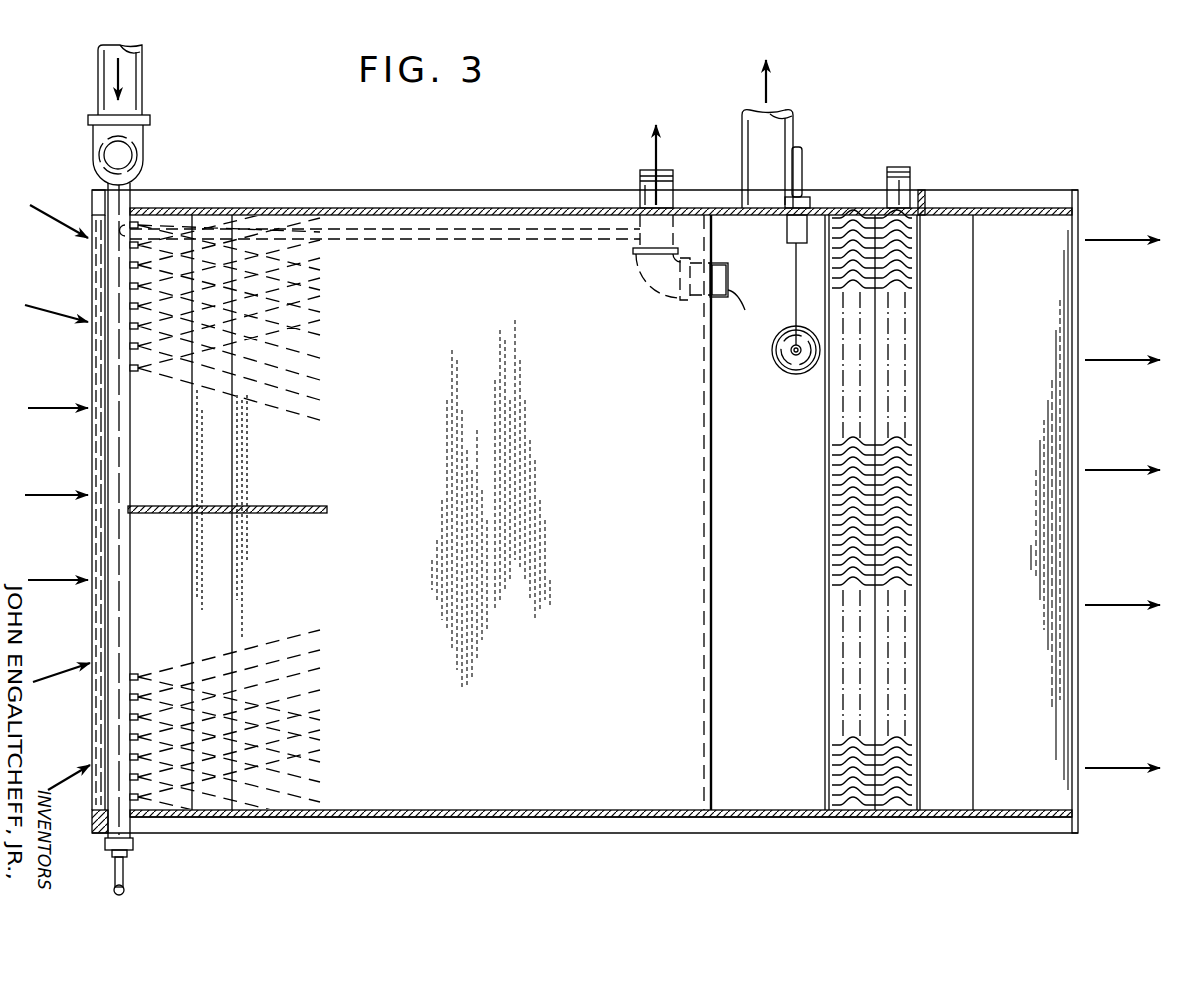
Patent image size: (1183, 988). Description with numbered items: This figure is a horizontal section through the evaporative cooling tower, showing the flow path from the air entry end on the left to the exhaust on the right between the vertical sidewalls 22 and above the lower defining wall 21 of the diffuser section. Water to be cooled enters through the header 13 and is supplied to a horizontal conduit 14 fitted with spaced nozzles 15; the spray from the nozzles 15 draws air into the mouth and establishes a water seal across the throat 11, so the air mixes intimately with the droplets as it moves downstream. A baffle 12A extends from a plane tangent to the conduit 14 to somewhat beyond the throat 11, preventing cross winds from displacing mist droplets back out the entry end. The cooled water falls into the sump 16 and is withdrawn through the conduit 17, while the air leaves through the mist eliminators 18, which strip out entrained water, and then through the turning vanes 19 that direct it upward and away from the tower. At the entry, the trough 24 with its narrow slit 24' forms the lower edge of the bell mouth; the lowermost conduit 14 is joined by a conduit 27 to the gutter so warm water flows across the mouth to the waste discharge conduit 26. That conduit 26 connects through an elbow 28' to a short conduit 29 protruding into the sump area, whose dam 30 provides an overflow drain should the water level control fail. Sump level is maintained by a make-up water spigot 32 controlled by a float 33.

The throat 11 is at (215, 546).
The baffle 12A is at (297, 505).
The header 13 is at (104, 140).
The horizontal conduit 14 is at (118, 459).
The nozzle 15 is at (140, 371).
The sump 16 is at (780, 564).
The conduit 17 is at (750, 128).
The mist eliminator 18 is at (918, 476).
The turning vane 19 is at (1040, 572).
The lower defining wall 21 is at (466, 785).
The sidewall 22 is at (500, 207).
The trough 24 is at (66, 512).
The slit 24' is at (71, 512).
The waste discharge conduit 26 is at (640, 178).
The conduit 27 is at (125, 870).
The elbow 28' is at (420, 276).
The short conduit 29 is at (716, 268).
The dam 30 is at (746, 316).
The make-up water spigot 32 is at (786, 240).
The float 33 is at (792, 374).